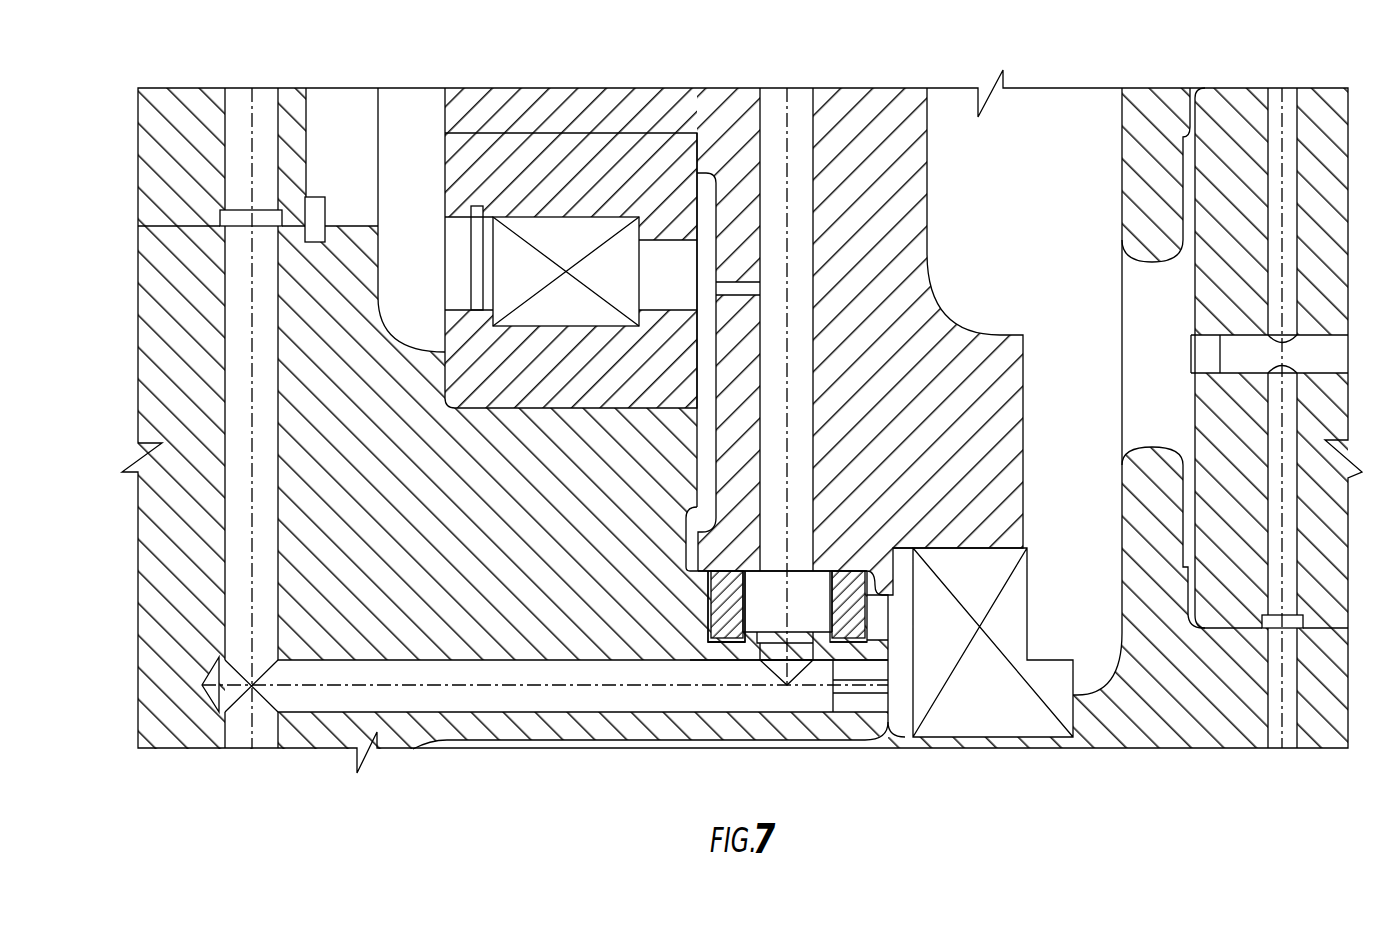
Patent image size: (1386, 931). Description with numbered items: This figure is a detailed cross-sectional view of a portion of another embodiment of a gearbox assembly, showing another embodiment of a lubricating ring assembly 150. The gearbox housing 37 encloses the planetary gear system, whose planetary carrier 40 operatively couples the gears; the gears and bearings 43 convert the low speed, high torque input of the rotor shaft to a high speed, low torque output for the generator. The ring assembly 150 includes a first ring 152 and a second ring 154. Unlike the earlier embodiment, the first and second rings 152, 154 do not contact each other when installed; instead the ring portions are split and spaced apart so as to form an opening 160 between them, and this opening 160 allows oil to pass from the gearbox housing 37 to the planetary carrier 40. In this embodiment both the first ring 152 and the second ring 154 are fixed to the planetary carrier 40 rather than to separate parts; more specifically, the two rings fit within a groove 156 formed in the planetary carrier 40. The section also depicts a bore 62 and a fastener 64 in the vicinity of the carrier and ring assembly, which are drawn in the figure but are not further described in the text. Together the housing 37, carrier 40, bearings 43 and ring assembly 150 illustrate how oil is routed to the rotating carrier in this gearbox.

The gearbox housing 37 is at (885, 100).
The planetary carrier 40 is at (452, 618).
The bearings 43 is at (598, 150).
The bore 62 is at (805, 126).
The bolt 64 is at (540, 697).
The ring assembly 150 is at (868, 535).
The first ring 152 is at (727, 606).
The second ring 154 is at (857, 610).
The groove 156 is at (724, 644).
The opening 160 is at (783, 582).